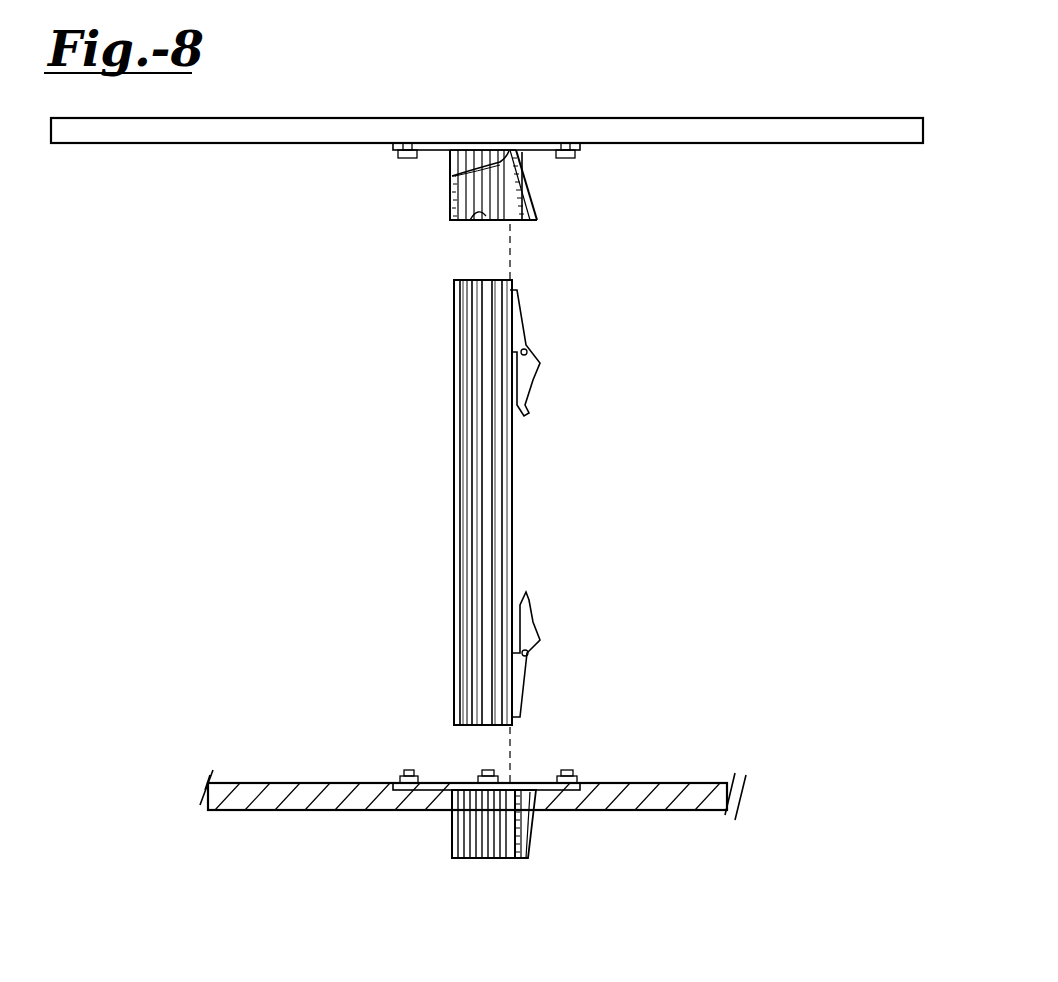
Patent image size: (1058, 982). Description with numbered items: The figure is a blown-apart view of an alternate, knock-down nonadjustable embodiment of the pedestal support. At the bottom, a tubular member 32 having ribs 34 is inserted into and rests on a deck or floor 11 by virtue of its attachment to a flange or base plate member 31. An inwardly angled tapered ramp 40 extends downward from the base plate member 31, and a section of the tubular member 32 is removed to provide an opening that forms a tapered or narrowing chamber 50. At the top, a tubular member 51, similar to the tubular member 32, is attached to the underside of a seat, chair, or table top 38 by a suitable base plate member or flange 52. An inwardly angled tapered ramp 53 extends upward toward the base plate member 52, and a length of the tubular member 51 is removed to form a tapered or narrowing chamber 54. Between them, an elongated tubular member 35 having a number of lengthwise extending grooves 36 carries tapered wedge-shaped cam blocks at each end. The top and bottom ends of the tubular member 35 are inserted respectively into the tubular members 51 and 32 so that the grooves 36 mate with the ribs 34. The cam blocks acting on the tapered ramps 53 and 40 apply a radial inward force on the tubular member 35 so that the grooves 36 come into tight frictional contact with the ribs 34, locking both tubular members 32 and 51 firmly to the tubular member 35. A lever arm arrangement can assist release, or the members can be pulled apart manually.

The table top 38 is at (613, 118).
The base plate member 52 is at (420, 153).
The tubular member 51 is at (452, 178).
The ribs 34 is at (478, 222).
The tapered ramp 53 is at (530, 172).
The narrowing chamber 54 is at (520, 222).
The grooves 36 is at (468, 400).
The elongated tubular member 35 is at (455, 517).
The base plate member 31 is at (542, 788).
The deck or floor 11 is at (675, 783).
The tubular member 32 is at (452, 838).
The narrowing chamber 50 is at (518, 822).
The tapered ramp 40 is at (528, 850).